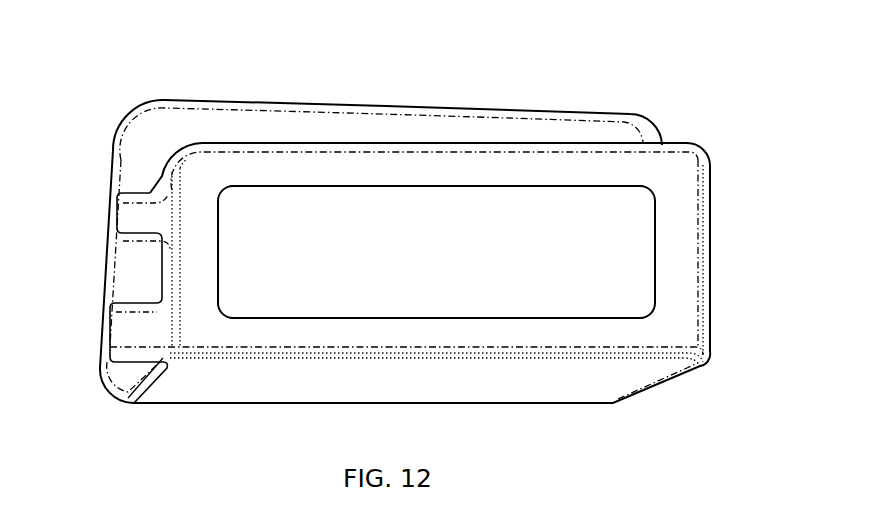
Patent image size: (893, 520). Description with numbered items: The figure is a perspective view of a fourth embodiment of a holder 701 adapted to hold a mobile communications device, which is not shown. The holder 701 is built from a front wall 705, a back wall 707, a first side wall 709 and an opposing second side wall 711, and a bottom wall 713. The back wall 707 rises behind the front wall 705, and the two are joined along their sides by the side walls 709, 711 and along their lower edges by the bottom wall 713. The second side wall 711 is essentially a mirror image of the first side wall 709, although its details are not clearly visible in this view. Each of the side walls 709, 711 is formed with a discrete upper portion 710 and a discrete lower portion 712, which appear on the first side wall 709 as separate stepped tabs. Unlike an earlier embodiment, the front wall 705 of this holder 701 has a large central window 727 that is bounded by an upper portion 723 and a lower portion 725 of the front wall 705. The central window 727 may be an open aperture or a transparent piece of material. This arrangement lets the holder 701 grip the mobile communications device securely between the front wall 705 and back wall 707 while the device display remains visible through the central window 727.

The holder 701 is at (141, 54).
The front wall 705 is at (218, 333).
The back wall 707 is at (112, 160).
The first side wall 709 is at (98, 269).
The upper portion of side wall 710 is at (120, 222).
The second side wall 711 is at (710, 300).
The lower portion of side wall 712 is at (120, 333).
The bottom wall 713 is at (398, 395).
The upper portion of front wall 723 is at (357, 188).
The lower portion of front wall 725 is at (356, 317).
The central window 727 is at (463, 259).